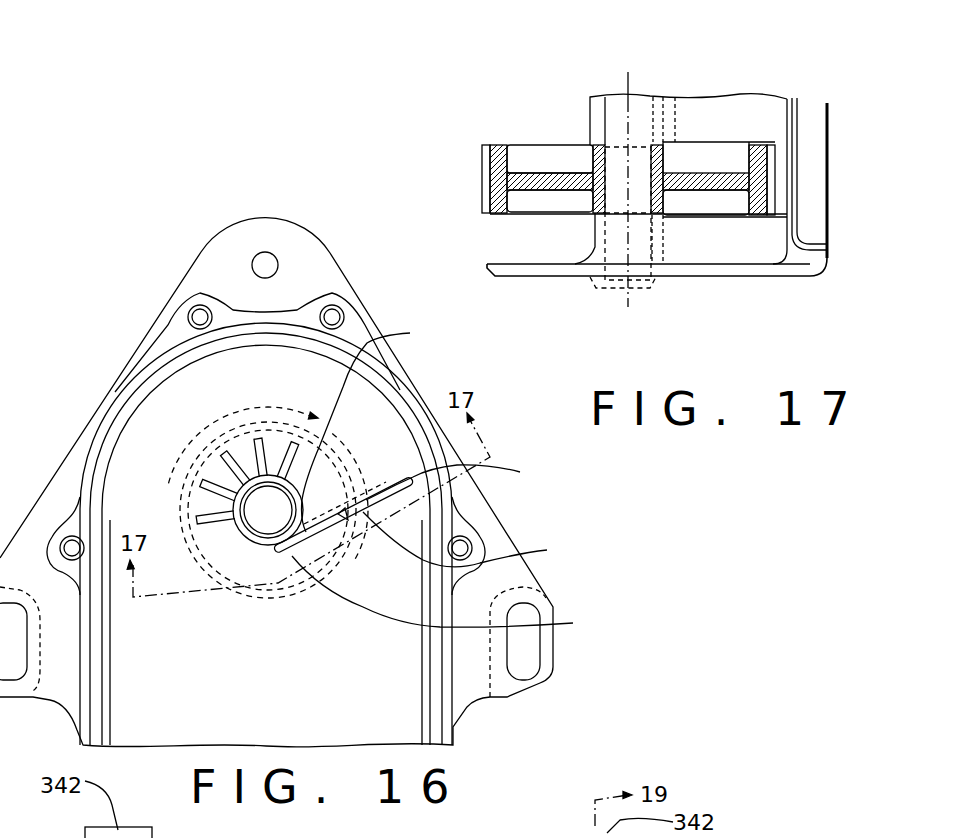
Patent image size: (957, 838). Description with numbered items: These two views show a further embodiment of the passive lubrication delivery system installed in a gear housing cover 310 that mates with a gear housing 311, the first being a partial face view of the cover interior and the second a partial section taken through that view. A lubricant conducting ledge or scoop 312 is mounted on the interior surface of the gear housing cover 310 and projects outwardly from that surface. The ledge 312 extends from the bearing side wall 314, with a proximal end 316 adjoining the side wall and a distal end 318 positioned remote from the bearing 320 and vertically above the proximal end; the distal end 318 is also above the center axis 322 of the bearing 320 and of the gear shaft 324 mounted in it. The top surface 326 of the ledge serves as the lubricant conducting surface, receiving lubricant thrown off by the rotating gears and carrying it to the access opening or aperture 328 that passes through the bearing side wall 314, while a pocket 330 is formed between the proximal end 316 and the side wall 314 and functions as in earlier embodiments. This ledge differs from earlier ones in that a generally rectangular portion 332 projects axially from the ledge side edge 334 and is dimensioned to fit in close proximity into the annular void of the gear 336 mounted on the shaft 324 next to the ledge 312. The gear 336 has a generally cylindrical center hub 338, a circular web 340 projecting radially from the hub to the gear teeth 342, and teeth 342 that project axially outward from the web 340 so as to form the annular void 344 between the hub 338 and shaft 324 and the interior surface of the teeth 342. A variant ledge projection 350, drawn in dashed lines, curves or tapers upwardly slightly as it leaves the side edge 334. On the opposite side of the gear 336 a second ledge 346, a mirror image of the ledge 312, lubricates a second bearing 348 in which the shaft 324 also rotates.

In FIG. 16, the gear housing cover 310 is at (477, 530).
In FIG. 17, the gear housing cover 310 is at (708, 272).
In FIG. 17, the gear housing 311 is at (827, 137).
In FIG. 16, the lubricant conducting ledge 312 is at (365, 492).
In FIG. 17, the lubricant conducting ledge 312 is at (748, 249).
In FIG. 16, the bearing side wall 314 is at (377, 426).
In FIG. 17, the bearing side wall 314 is at (595, 248).
In FIG. 16, the proximal end 316 is at (281, 556).
In FIG. 16, the distal end 318 is at (465, 480).
In FIG. 17, the distal end 318 is at (823, 273).
In FIG. 16, the bearing 320 is at (235, 506).
In FIG. 17, the bearing 320 is at (643, 255).
In FIG. 17, the center axis 322 is at (633, 75).
In FIG. 17, the gear shaft 324 is at (600, 214).
In FIG. 16, the top surface 326 is at (353, 518).
In FIG. 16, the access opening 328 is at (327, 437).
In FIG. 16, the pocket 330 is at (289, 551).
In FIG. 16, the projecting portion 332 is at (477, 539).
In FIG. 17, the projecting portion 332 is at (706, 204).
In FIG. 16, the ledge side edge 334 is at (453, 596).
In FIG. 17, the ledge side edge 334 is at (763, 213).
In FIG. 17, the gear 336 is at (515, 218).
In FIG. 17, the center hub 338 is at (597, 146).
In FIG. 17, the circular web 340 is at (515, 146).
In FIG. 17, the gear teeth 342 is at (487, 178).
In FIG. 17, the annular void 344 is at (558, 150).
In FIG. 17, the second ledge 346 is at (715, 113).
In FIG. 17, the second bearing 348 is at (588, 92).
In FIG. 16, the variant ledge projection 350 is at (385, 490).